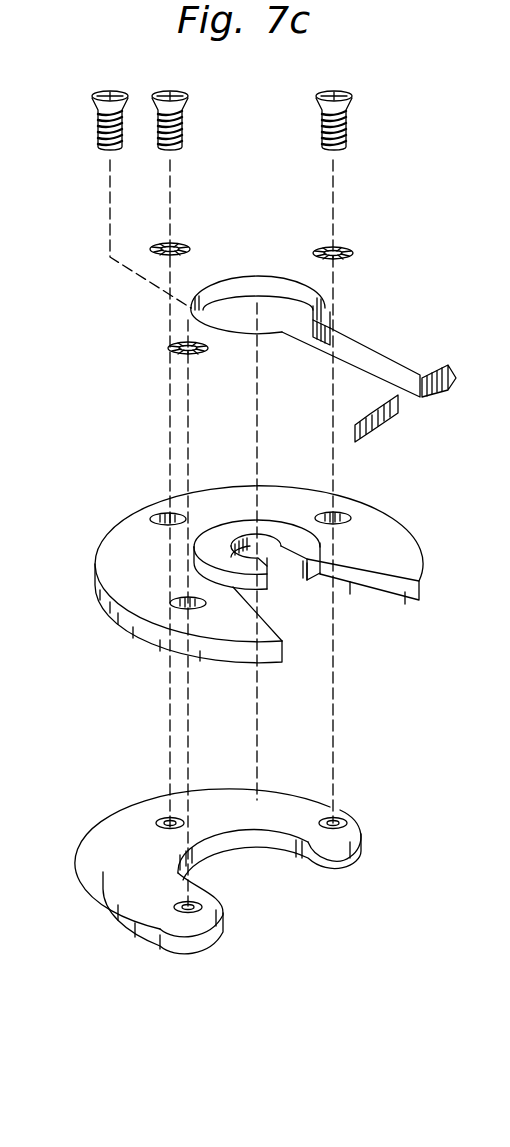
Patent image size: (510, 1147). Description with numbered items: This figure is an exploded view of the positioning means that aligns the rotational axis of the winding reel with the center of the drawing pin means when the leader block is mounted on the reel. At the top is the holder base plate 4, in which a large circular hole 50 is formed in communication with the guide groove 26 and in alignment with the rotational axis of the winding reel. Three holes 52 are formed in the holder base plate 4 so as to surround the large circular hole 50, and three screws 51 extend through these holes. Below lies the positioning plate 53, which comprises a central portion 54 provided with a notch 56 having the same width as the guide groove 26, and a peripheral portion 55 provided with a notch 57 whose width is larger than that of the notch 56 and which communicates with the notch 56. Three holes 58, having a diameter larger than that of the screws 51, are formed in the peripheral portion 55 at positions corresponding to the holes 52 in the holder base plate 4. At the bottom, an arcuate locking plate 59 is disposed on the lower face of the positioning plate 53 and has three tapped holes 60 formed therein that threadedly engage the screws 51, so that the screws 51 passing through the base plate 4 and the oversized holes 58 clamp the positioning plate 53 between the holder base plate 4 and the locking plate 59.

The holder base plate 4 is at (440, 397).
The guide groove 26 is at (367, 357).
The large circular hole 50 is at (323, 330).
The screws 51 is at (97, 129).
The holes 52 is at (185, 247).
The positioning plate 53 is at (259, 557).
The central portion 54 is at (257, 519).
The peripheral portion 55 is at (122, 543).
The notch 56 is at (259, 558).
The notch 57 is at (325, 620).
The holes 58 is at (163, 515).
The arcuate locking plate 59 is at (223, 872).
The tapped holes 60 is at (167, 821).